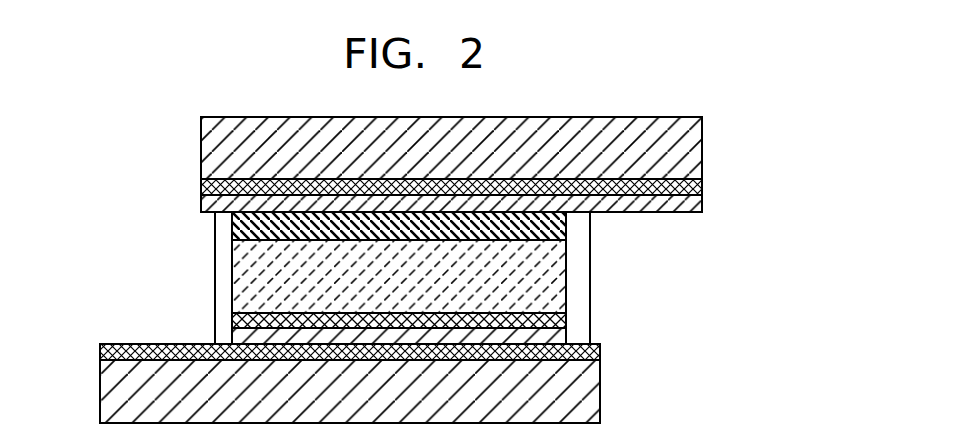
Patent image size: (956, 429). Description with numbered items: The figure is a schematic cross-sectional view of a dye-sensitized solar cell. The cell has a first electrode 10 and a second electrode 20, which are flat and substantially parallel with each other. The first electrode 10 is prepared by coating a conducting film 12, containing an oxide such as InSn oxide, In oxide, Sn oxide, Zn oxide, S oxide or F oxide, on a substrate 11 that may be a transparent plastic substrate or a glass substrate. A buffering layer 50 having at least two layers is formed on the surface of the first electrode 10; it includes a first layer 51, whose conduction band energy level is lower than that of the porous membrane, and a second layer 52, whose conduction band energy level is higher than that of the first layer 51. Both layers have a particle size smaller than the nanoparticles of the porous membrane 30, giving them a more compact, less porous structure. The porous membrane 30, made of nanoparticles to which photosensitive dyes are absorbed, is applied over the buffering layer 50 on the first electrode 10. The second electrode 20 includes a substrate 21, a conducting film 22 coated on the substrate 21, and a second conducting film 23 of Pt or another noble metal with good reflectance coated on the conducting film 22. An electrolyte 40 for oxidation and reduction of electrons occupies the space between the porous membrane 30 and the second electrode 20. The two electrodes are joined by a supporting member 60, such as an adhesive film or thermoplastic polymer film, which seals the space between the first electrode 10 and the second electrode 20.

The first electrode 10 is at (408, 383).
The substrate 11 is at (601, 390).
The conducting film 12 is at (601, 352).
The second electrode 20 is at (495, 167).
The substrate 21 is at (703, 148).
The conducting film 22 is at (703, 187).
The second conducting film 23 is at (475, 206).
The porous membrane 30 is at (566, 278).
The electrolyte 40 is at (566, 225).
The buffering layer 50 is at (456, 329).
The first layer 51 is at (590, 339).
The second layer 52 is at (590, 322).
The supporting member 60 is at (215, 278).